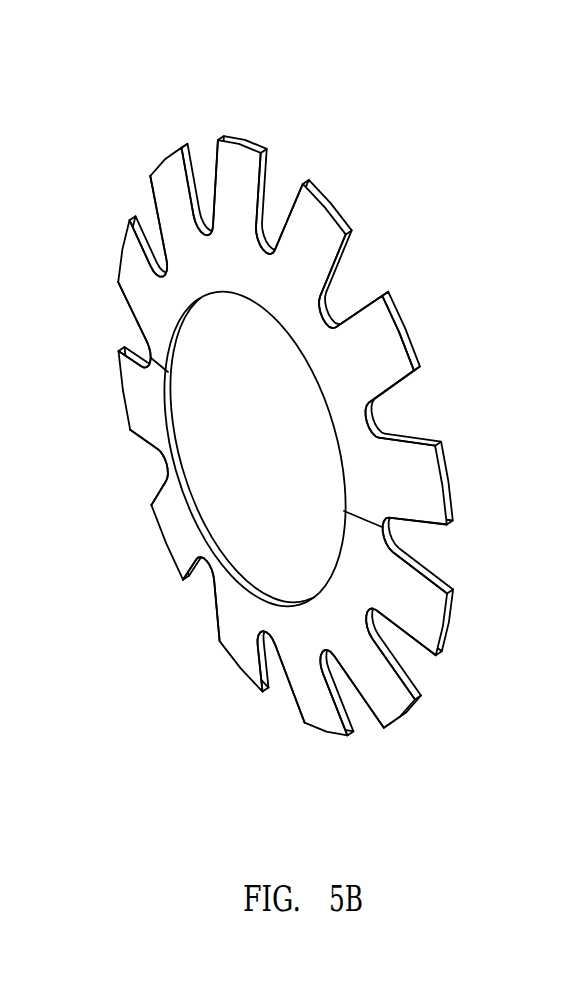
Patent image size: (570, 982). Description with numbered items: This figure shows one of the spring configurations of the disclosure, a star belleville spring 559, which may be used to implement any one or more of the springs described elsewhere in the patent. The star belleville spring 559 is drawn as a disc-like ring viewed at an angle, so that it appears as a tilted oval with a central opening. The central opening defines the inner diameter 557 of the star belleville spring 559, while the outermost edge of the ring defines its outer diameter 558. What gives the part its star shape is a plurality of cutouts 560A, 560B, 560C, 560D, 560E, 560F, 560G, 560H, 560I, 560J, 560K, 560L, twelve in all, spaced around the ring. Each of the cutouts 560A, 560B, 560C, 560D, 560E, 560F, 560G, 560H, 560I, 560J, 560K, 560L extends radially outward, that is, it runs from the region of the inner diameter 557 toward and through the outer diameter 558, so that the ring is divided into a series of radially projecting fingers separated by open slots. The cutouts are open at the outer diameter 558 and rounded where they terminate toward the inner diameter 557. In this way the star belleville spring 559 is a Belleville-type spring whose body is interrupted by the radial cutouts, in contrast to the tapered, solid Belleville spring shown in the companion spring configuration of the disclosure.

The star belleville spring 559 is at (325, 68).
The outer diameter 558 is at (405, 328).
The inner diameter 557 is at (190, 472).
The cutout 560A is at (420, 410).
The cutout 560B is at (447, 552).
The cutout 560C is at (412, 662).
The cutout 560D is at (360, 720).
The cutout 560E is at (278, 697).
The cutout 560F is at (202, 588).
The cutout 560G is at (150, 473).
The cutout 560H is at (120, 332).
The cutout 560I is at (143, 215).
The cutout 560J is at (200, 156).
The cutout 560K is at (280, 190).
The cutout 560L is at (352, 284).